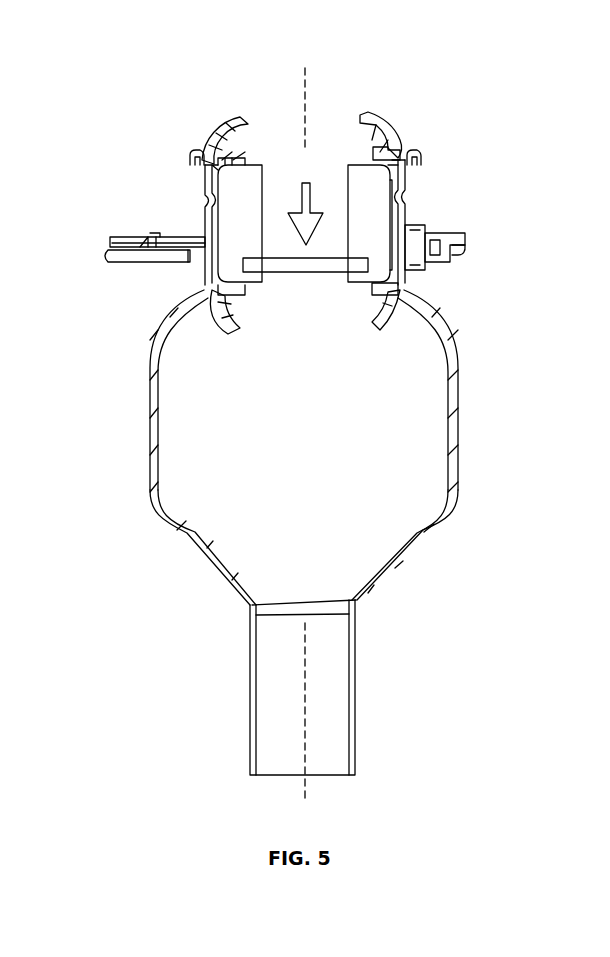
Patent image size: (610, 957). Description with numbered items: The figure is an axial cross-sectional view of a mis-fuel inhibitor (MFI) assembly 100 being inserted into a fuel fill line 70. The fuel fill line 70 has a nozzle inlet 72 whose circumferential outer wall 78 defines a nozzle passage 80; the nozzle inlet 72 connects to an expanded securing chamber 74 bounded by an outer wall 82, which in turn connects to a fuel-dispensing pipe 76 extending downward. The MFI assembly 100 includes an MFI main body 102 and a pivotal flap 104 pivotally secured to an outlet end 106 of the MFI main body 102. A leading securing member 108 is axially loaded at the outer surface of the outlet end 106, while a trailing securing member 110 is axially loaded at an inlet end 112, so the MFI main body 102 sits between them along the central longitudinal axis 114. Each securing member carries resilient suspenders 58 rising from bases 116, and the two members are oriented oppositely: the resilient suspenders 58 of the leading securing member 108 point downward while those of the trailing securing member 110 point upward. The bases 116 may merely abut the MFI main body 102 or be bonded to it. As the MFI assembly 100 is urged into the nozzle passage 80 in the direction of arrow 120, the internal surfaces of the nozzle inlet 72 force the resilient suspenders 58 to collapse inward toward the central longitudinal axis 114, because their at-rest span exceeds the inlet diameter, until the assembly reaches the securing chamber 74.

The resilient suspender 58 is at (240, 120).
The fuel fill line 70 is at (98, 411).
The nozzle inlet 72 is at (412, 163).
The securing chamber 74 is at (458, 452).
The fuel-dispensing pipe 76 is at (355, 690).
The circumferential outer wall 78 is at (208, 186).
The nozzle passage 80 is at (205, 236).
The outer wall 82 is at (150, 488).
The mis-fuel inhibitor (MFI) assembly 100 is at (395, 180).
The MFI main body 102 is at (398, 205).
The pivotal flap 104 is at (425, 235).
The outlet end 106 is at (445, 258).
The leading securing member 108 is at (400, 318).
The trailing securing member 110 is at (368, 118).
The inlet end 112 is at (222, 143).
The central longitudinal axis 114 is at (305, 83).
The bases 116 is at (236, 160).
The arrow 120 is at (310, 190).